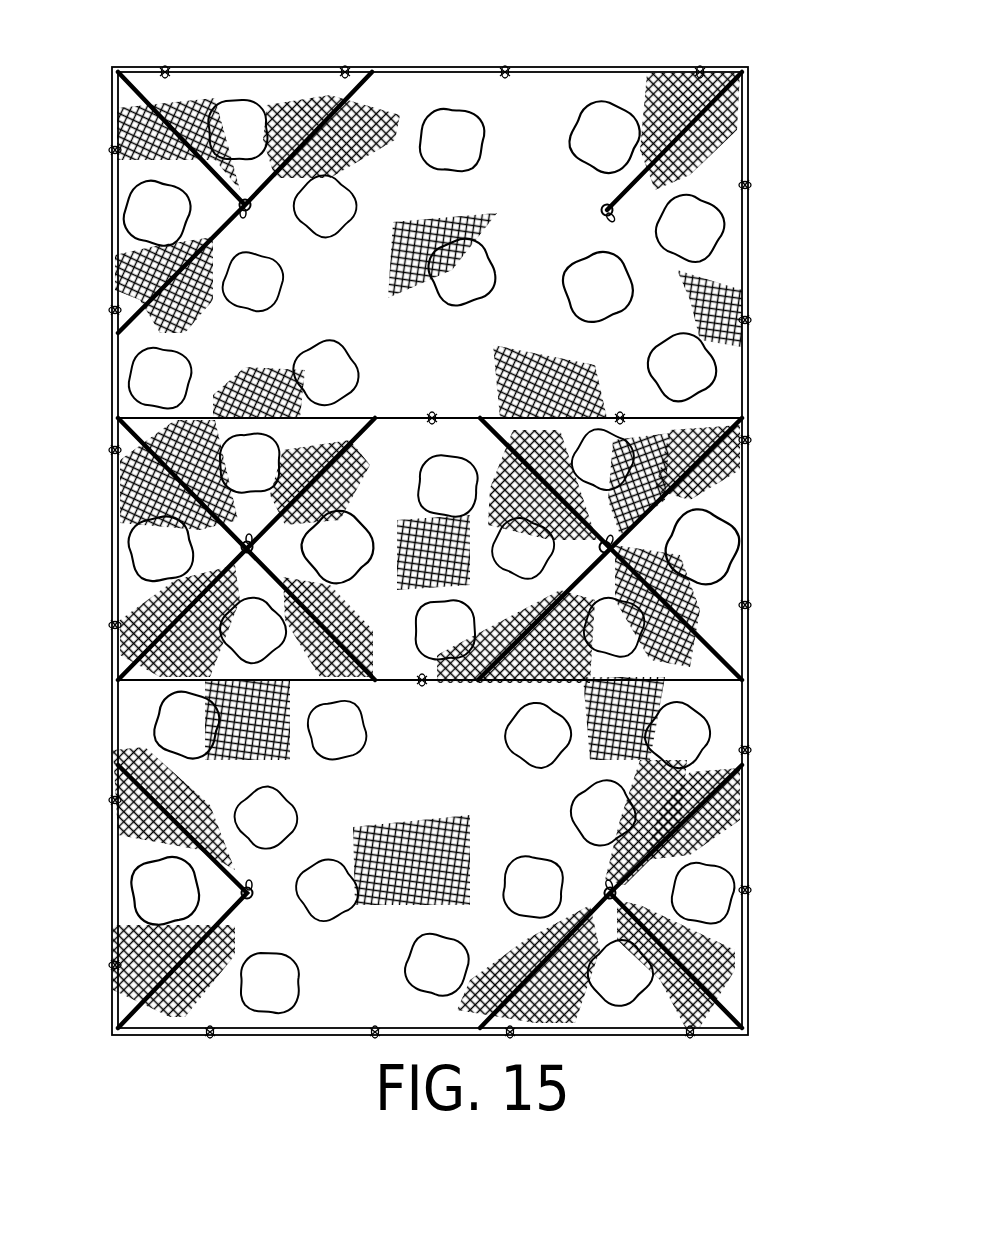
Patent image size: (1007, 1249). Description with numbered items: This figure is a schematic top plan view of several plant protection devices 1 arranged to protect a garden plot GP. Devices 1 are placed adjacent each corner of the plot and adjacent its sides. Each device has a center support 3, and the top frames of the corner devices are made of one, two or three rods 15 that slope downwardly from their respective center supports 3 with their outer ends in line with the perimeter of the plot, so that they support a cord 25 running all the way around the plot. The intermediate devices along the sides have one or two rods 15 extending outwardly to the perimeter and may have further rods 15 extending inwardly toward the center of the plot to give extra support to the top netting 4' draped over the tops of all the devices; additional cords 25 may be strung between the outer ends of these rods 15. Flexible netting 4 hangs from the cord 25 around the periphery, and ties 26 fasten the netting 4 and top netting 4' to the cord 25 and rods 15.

The plant protection device 1 is at (641, 103).
The center support 3 is at (594, 212).
The flexible netting 4 is at (430, 524).
The top netting 4' is at (276, 512).
The top frame rod 15 is at (150, 98).
The cord 25 is at (585, 70).
The tie 26 is at (345, 70).
The garden plot GP is at (770, 264).